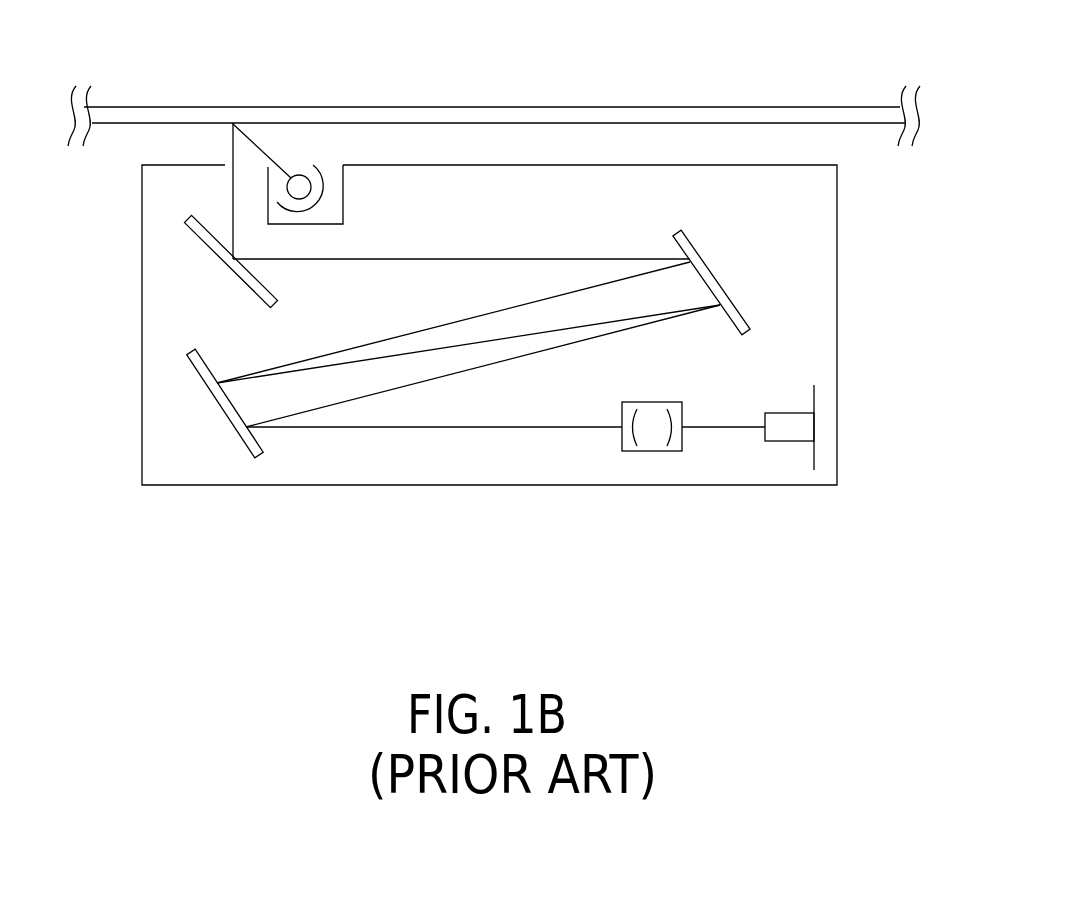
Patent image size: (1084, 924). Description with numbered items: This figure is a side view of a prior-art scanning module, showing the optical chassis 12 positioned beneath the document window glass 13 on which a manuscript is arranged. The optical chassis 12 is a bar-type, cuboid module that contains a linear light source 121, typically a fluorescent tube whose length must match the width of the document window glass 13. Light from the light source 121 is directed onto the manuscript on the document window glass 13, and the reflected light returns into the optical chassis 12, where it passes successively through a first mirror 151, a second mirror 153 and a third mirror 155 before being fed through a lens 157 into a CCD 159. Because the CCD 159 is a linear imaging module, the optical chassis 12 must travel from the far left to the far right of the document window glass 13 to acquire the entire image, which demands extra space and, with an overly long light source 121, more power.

The optical chassis 12 is at (837, 408).
The document window glass 13 is at (560, 107).
The linear light source 121 is at (300, 175).
The first mirror 151 is at (238, 275).
The second mirror 153 is at (716, 288).
The third mirror 155 is at (222, 403).
The lens 157 is at (655, 443).
The CCD 159 is at (790, 433).